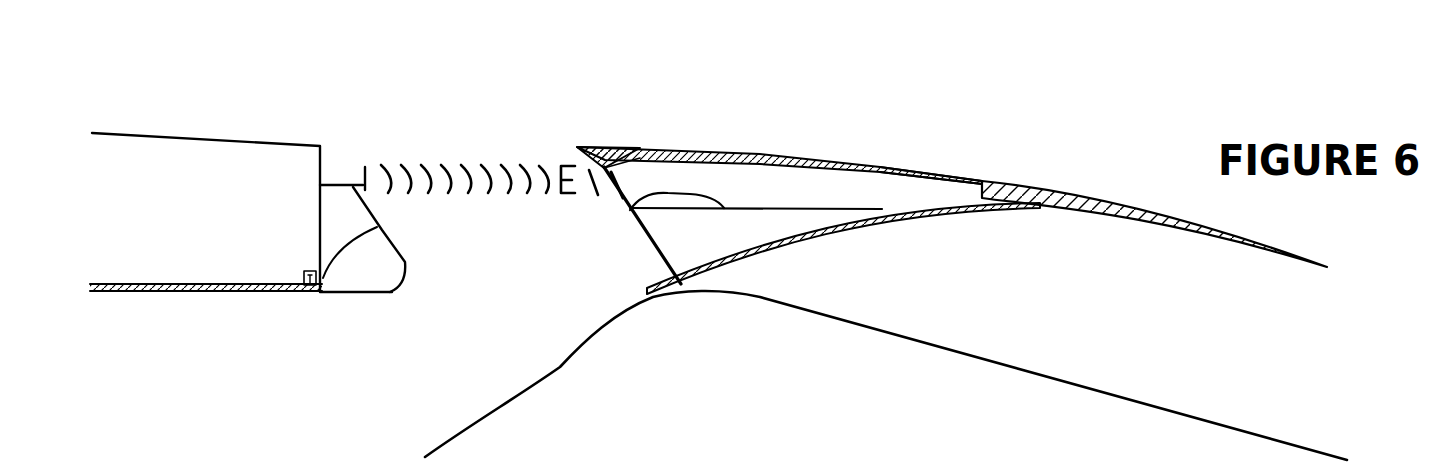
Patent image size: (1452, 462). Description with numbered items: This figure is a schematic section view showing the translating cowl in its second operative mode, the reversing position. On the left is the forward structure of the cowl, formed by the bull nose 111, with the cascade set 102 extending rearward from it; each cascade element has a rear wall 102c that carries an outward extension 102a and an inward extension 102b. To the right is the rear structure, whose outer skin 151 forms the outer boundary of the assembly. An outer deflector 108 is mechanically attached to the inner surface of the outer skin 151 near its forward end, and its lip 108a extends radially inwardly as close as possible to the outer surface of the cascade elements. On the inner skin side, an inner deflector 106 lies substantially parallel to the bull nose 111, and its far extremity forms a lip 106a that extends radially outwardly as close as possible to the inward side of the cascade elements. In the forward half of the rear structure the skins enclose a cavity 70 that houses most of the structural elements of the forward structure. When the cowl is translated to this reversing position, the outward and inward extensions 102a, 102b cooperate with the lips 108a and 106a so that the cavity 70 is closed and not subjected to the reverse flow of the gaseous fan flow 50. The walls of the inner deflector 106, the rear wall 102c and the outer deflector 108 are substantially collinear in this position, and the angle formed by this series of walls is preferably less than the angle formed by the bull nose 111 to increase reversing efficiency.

The gaseous fan flow 50 is at (433, 103).
The cavity 70 is at (782, 183).
The cascade set 102 is at (393, 163).
The outward extension 102a is at (620, 167).
The inward extension 102b is at (727, 208).
The rear wall 102c is at (623, 180).
The inner deflector 106 is at (640, 243).
The lip 106a is at (625, 203).
The outer deflector 108 is at (583, 153).
The lip 108a is at (623, 177).
The bull nose 111 is at (314, 288).
The outer skin 151 is at (828, 157).